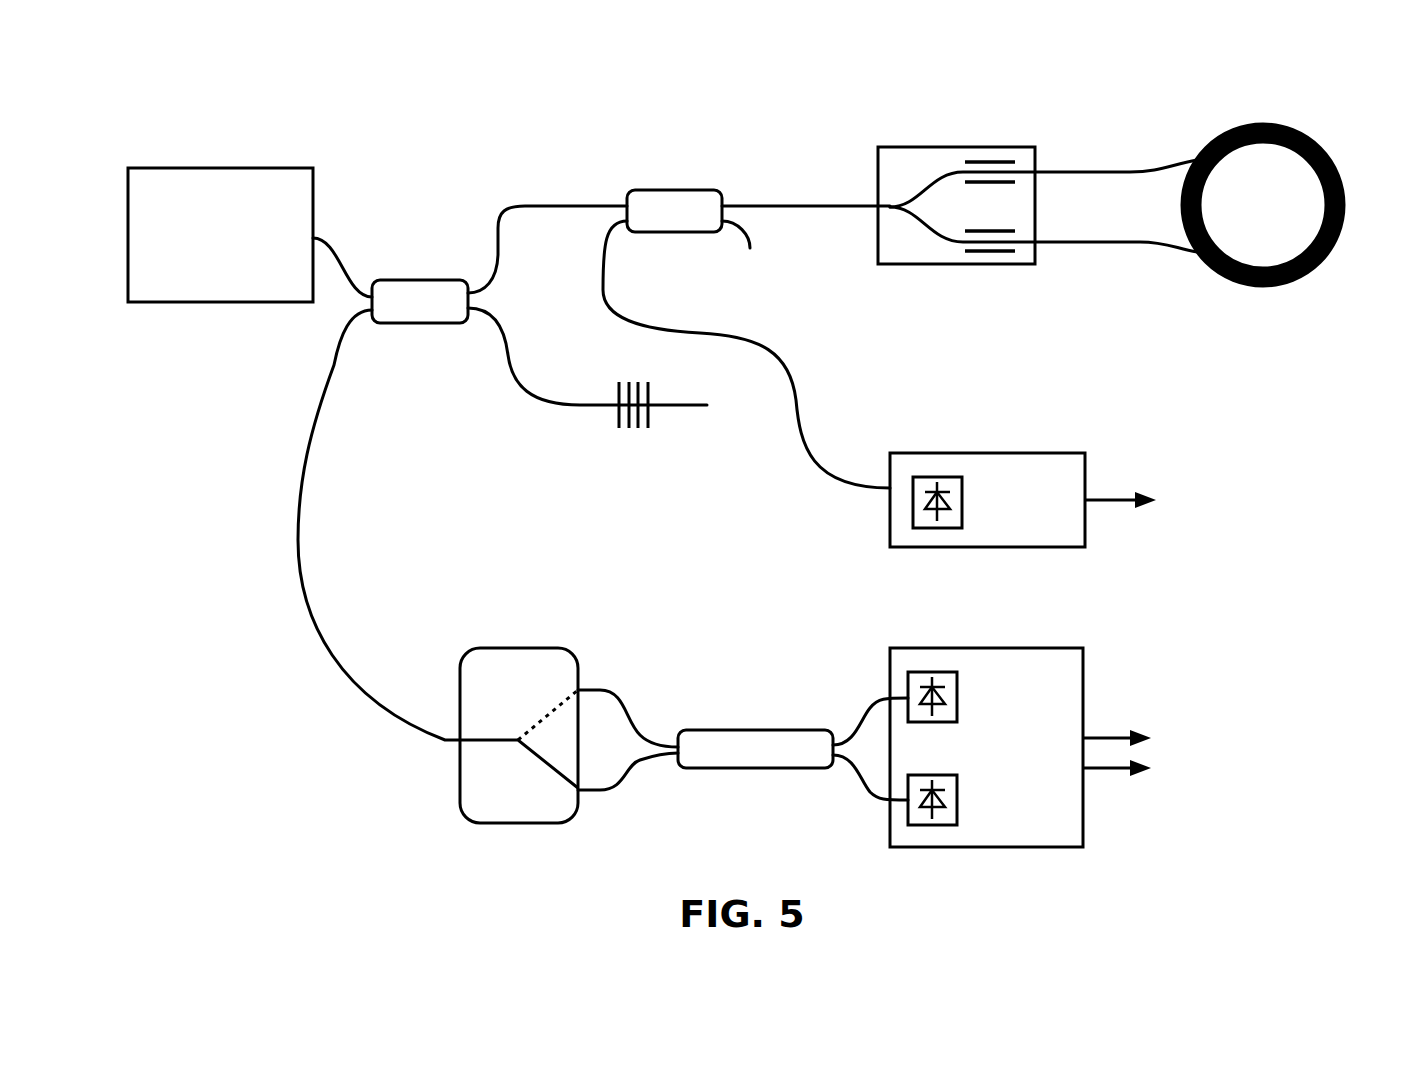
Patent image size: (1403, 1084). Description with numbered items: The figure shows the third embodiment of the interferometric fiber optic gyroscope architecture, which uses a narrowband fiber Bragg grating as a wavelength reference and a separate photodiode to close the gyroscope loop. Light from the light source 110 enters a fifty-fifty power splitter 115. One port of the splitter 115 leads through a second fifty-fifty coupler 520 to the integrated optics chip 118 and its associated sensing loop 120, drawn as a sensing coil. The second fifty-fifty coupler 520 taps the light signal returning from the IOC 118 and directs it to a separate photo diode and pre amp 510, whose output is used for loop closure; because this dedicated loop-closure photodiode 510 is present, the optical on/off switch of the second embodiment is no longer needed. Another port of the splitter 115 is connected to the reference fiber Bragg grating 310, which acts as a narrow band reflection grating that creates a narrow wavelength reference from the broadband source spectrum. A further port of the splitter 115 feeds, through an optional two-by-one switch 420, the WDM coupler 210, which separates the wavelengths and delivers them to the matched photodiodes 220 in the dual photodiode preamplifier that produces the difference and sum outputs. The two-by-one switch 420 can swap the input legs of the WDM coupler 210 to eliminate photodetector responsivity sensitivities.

The light source 110 is at (245, 167).
The 50/50 power splitter 115 is at (452, 277).
The second 50/50 coupler 520 is at (702, 190).
The integrated optics chip 118 is at (888, 147).
The sensing loop 120 is at (1218, 137).
The fiber Bragg grating 310 is at (648, 393).
The photo diode and pre amp 510 is at (1050, 548).
The matched photodiodes 220 is at (947, 645).
The WDM coupler 210 is at (763, 728).
The 2×1 switch 420 is at (460, 777).